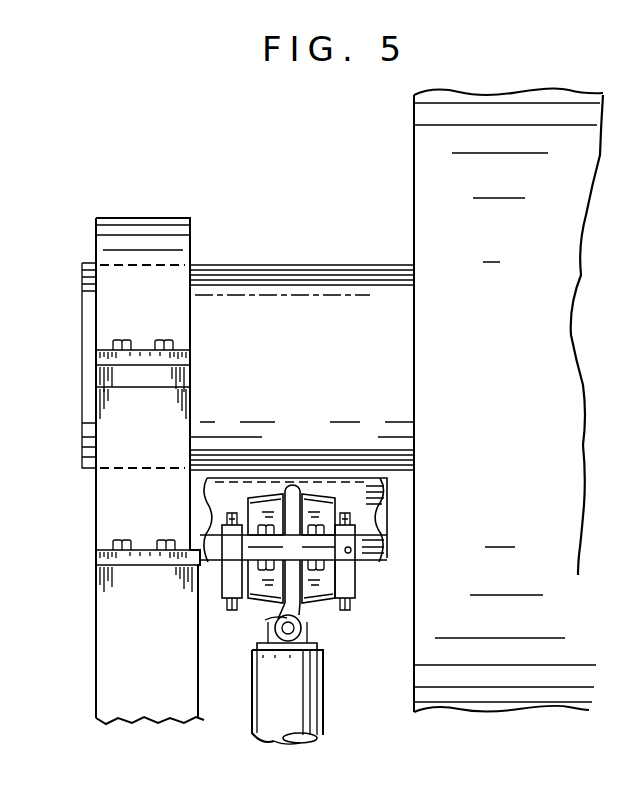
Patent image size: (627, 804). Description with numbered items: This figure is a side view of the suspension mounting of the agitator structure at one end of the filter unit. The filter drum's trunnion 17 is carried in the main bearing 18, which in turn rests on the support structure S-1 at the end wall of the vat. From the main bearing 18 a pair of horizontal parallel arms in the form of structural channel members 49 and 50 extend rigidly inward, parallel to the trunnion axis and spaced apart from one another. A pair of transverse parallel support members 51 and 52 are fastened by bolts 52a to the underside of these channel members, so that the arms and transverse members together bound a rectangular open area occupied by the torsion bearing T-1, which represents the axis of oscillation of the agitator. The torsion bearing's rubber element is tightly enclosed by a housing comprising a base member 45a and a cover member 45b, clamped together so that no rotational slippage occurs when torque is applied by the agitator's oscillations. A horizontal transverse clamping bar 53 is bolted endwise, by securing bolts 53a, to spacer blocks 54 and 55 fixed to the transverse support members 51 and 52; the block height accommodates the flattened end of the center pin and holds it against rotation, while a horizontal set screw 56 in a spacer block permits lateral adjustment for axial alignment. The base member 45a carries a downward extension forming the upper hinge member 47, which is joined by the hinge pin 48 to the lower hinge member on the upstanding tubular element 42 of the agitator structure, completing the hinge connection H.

The main bearing 18 is at (110, 233).
The trunnion 17 is at (292, 373).
The channel member 49 is at (200, 503).
The channel member 50 is at (346, 481).
The torsion bearing T-1 is at (304, 472).
The cover member 45b is at (316, 500).
The base member 45a is at (312, 603).
The upper hinge member 47 is at (274, 620).
The hinge pin 48 is at (301, 628).
The hinge connection H is at (263, 633).
The upstanding tubular element 42 is at (300, 694).
The spacer block 54 is at (232, 552).
The transverse support member 51 is at (224, 578).
The bolt 52a is at (228, 605).
The securing bolt 53a is at (450, 503).
The clamping bar 53 is at (226, 522).
The spacer block 55 is at (356, 548).
The set screw 56 is at (350, 553).
The transverse support member 52 is at (352, 588).
The support structure S-1 is at (160, 673).